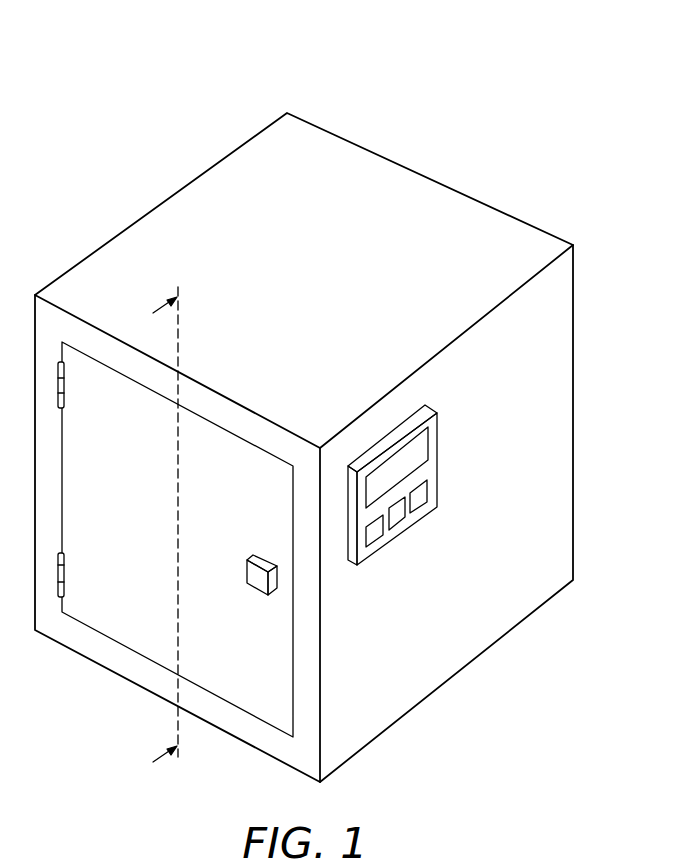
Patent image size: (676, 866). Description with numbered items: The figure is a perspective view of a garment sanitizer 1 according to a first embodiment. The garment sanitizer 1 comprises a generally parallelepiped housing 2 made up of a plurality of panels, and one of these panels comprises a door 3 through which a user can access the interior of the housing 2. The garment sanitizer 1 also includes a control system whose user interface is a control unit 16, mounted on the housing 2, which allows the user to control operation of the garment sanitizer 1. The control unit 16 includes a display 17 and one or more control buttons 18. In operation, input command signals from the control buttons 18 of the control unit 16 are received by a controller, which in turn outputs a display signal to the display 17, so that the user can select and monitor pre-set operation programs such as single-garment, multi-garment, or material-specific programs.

The garment sanitizer 1 is at (304, 401).
The housing 2 is at (203, 198).
The door 3 is at (112, 622).
The control unit 16 is at (421, 483).
The display 17 is at (418, 452).
The control buttons 18 is at (418, 500).